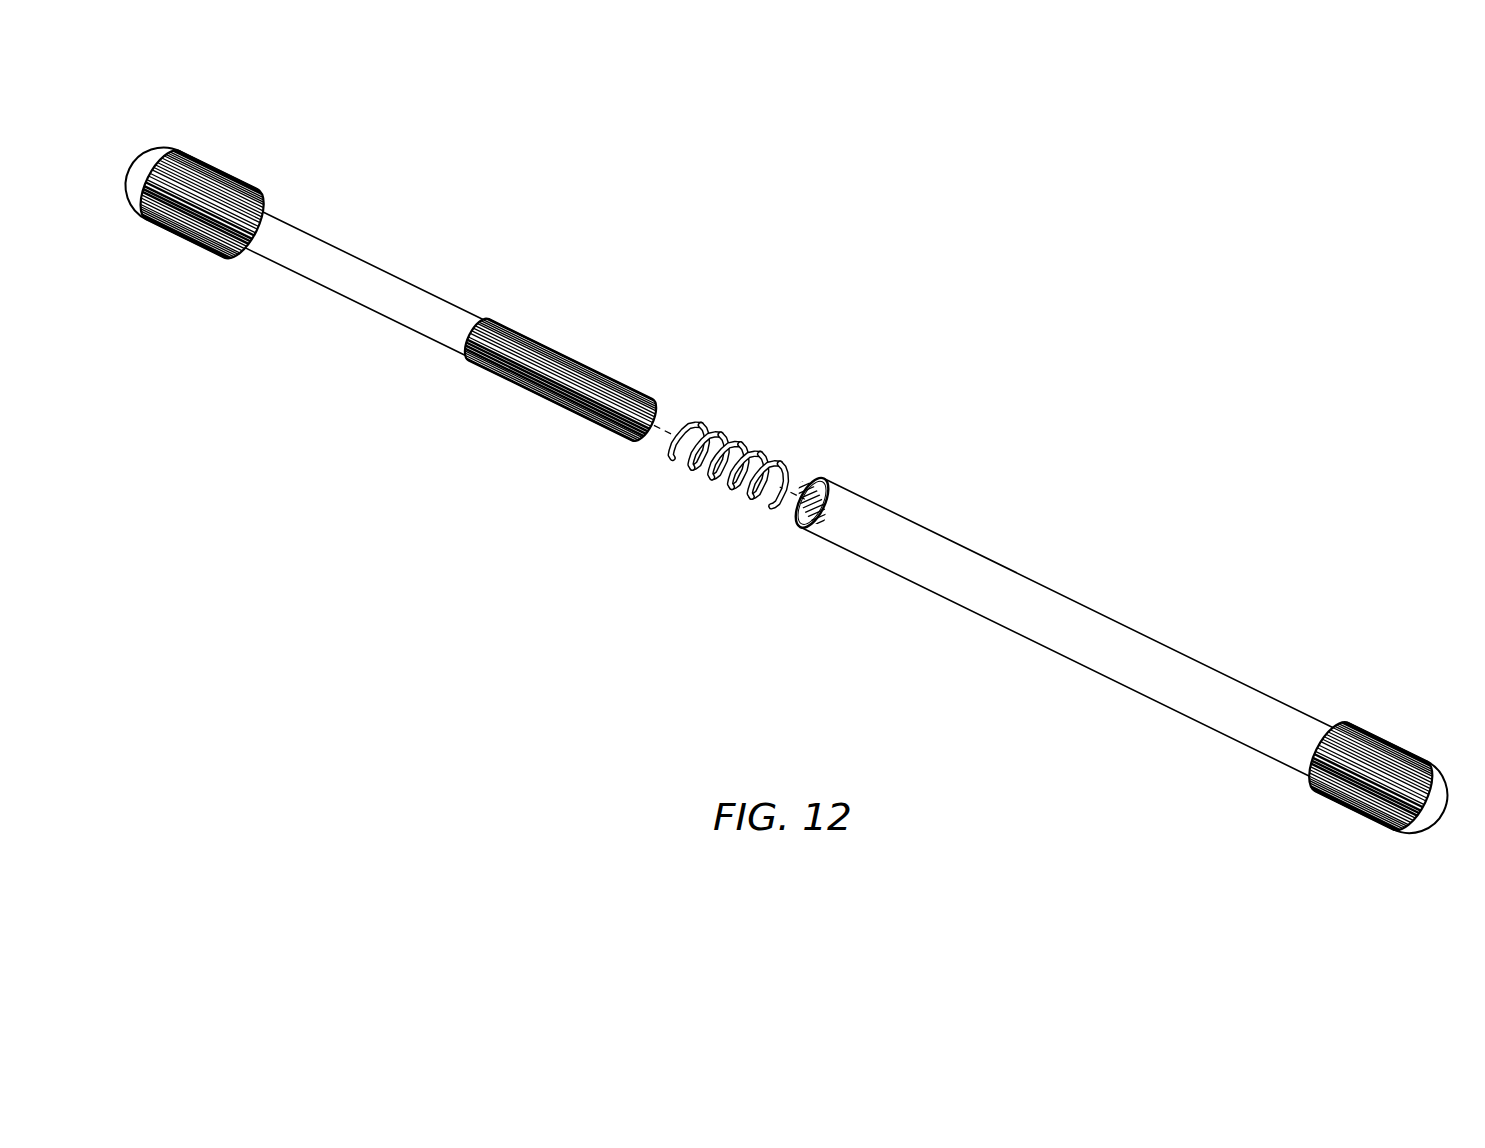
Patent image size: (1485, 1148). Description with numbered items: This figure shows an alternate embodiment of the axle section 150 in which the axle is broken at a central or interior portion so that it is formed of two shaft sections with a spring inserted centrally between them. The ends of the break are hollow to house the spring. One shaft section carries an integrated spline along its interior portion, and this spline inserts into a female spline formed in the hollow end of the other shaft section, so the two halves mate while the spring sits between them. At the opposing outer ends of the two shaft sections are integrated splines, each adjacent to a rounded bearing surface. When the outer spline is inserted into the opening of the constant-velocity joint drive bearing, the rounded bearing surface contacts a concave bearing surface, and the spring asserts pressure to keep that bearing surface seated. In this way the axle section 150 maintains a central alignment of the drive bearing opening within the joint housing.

The axle section 150 is at (1077, 433).